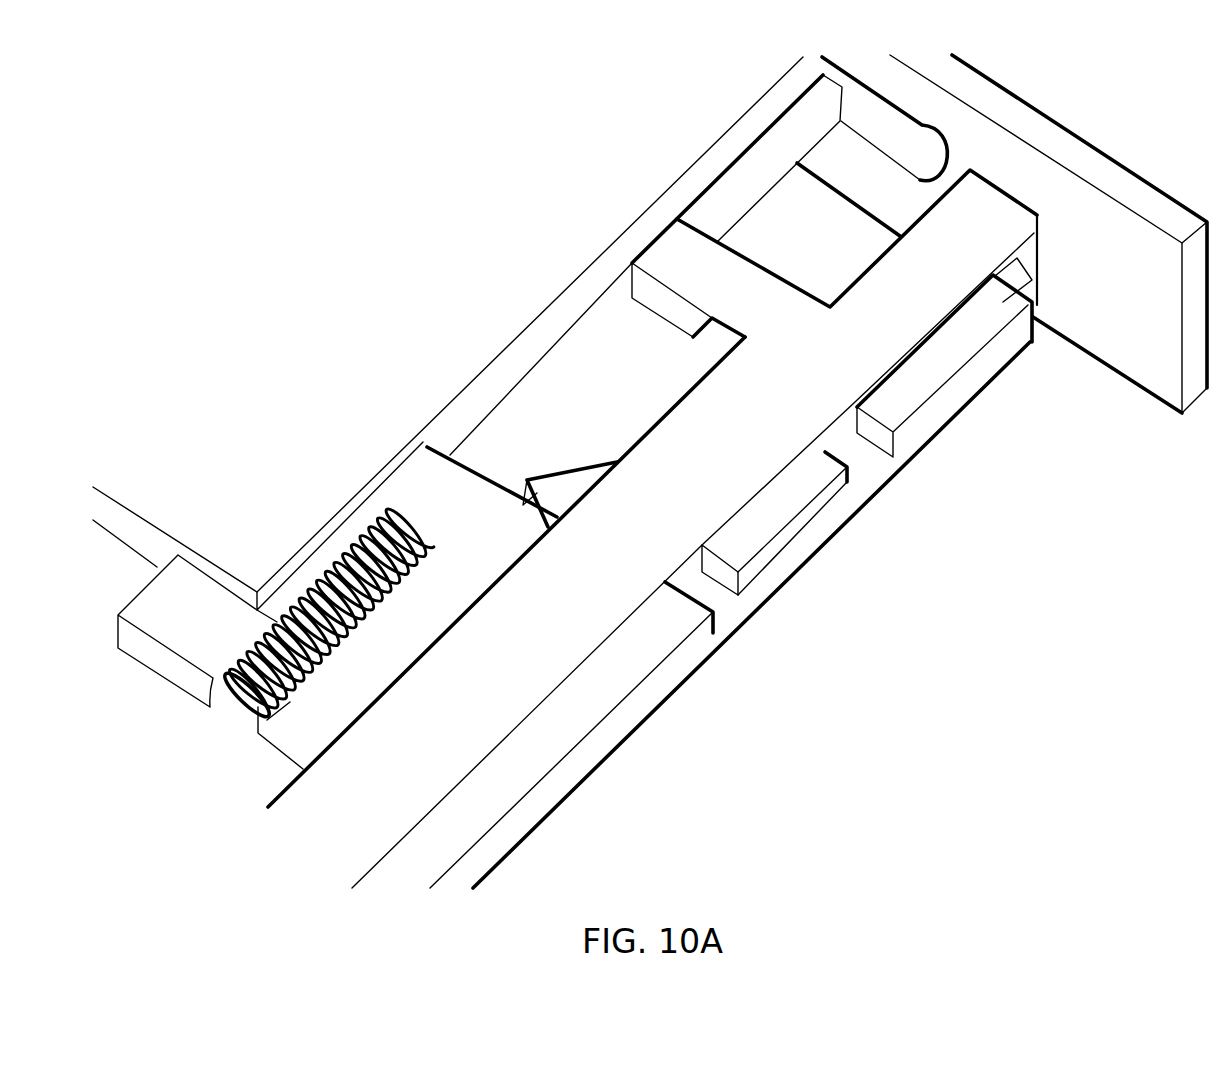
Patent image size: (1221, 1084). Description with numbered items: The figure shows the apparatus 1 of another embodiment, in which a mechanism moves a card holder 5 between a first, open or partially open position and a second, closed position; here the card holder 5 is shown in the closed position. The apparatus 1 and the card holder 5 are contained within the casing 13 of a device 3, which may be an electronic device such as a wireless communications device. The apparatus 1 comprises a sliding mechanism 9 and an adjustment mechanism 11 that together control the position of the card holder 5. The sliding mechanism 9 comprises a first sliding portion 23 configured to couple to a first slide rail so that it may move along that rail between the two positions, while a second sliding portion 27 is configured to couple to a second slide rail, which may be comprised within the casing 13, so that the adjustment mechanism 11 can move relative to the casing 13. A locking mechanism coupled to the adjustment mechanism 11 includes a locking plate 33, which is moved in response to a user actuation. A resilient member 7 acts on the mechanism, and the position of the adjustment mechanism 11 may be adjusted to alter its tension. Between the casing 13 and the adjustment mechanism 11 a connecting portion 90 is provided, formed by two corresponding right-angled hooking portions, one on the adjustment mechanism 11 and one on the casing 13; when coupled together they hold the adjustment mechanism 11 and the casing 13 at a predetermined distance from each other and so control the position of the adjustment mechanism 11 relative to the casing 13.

The apparatus 1 is at (812, 512).
The device 3 is at (1077, 157).
The card holder 5 is at (565, 333).
The resilient member 7 is at (242, 720).
The sliding mechanism 9 is at (330, 717).
The adjustment mechanism 11 is at (837, 383).
The casing 13 is at (1118, 355).
The first sliding portion 23 is at (410, 633).
The second sliding portion 27 is at (593, 600).
The locking plate 33 is at (567, 492).
The connecting portion 90 is at (1028, 282).